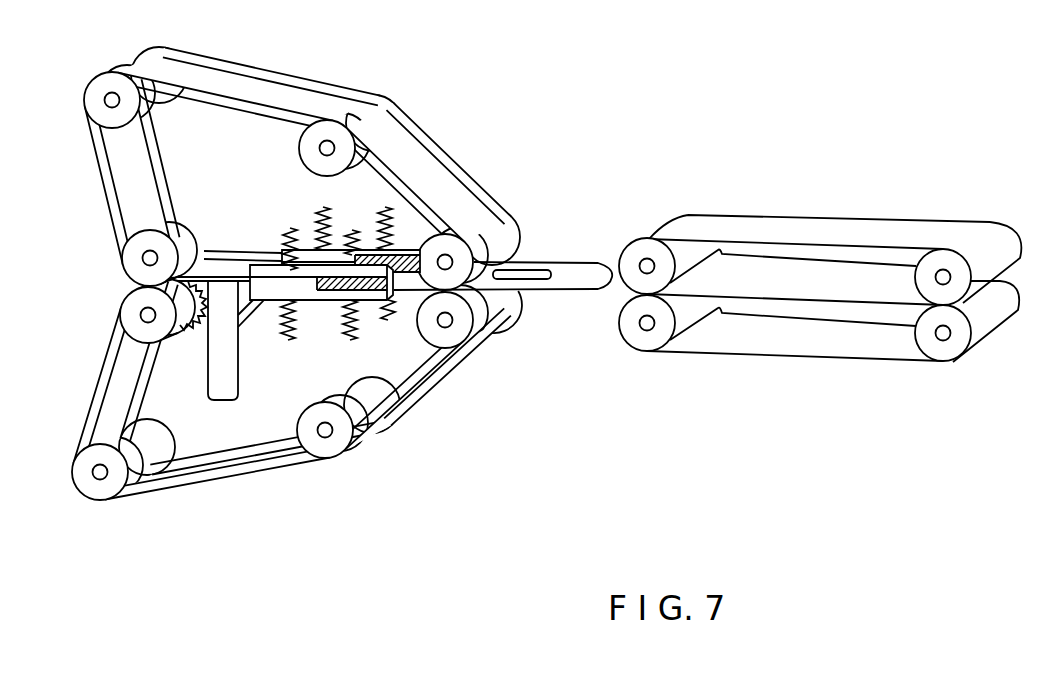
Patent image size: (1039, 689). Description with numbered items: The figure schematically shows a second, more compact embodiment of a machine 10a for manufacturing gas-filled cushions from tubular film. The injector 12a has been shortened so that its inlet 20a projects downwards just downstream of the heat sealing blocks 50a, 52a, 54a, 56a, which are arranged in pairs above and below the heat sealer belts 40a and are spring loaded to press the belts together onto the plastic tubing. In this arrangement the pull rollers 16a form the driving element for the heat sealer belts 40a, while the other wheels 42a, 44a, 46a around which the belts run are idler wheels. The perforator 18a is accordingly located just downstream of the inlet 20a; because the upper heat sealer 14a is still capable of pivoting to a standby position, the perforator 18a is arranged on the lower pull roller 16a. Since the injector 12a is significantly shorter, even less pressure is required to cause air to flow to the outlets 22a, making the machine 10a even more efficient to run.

The machine 10a is at (572, 97).
The injector 12a is at (573, 278).
The upper heat sealer 14a is at (420, 414).
The pull rollers 16a is at (133, 307).
The perforator 18a is at (190, 330).
The inlet 20a is at (228, 398).
The outlets 22a is at (532, 282).
The heat sealer belts 40a is at (167, 492).
The idler wheel 42a is at (97, 493).
The idler wheel 44a is at (323, 448).
The idler wheel 46a is at (467, 328).
The heat sealing block 50a is at (410, 247).
The heat sealing block 52a is at (368, 307).
The heat sealing block 54a is at (300, 245).
The heat sealing block 56a is at (302, 305).